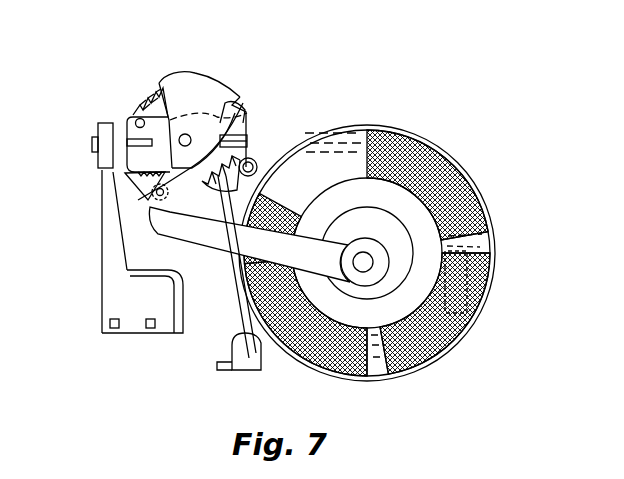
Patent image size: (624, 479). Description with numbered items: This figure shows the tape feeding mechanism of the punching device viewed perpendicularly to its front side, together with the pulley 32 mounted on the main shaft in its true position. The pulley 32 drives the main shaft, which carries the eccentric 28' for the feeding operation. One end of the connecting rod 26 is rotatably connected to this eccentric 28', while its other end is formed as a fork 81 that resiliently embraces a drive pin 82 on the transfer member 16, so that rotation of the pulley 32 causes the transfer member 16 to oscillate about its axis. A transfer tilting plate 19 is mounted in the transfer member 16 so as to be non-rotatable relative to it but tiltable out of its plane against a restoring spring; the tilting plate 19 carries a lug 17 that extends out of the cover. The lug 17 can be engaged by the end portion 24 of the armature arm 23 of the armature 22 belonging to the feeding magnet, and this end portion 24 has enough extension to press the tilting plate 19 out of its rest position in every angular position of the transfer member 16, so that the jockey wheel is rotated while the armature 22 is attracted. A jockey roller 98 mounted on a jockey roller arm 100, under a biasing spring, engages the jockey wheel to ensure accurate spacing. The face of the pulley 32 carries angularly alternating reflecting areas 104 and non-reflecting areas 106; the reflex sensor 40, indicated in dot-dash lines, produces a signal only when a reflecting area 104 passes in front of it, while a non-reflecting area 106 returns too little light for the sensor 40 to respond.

The transfer member 16 is at (187, 95).
The transfer tilting plate 19 is at (140, 157).
The lug 17 is at (97, 139).
The end portion of the armature arm 24 is at (103, 157).
The armature arm 23 is at (102, 207).
The armature 22 is at (137, 325).
The fork 81 is at (152, 200).
The connecting rod 26 is at (208, 240).
The jockey roller arm 100 is at (237, 312).
The drive pin 82 is at (237, 113).
The jockey roller 98 is at (253, 160).
The reflecting area 104 is at (348, 142).
The non-reflecting area 106 is at (457, 163).
The reflex sensor 40 is at (472, 278).
The eccentric 28' is at (429, 303).
The pulley 32 is at (425, 351).